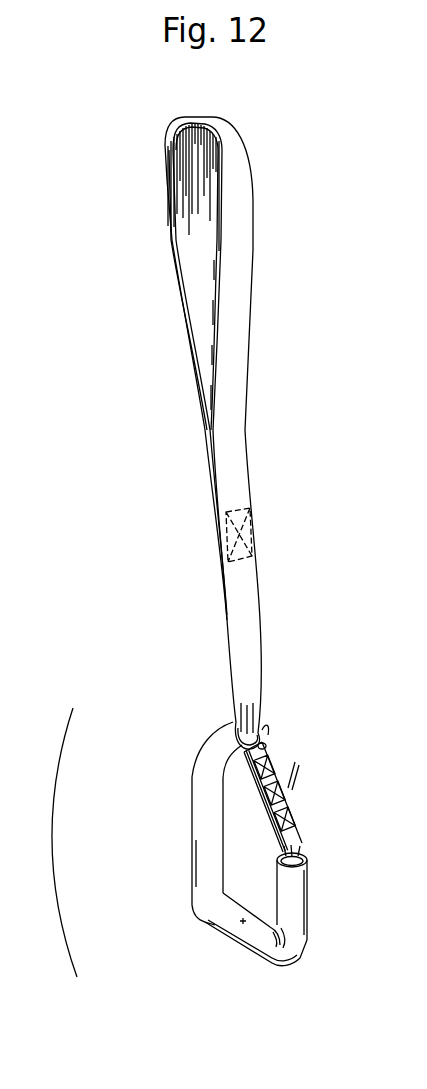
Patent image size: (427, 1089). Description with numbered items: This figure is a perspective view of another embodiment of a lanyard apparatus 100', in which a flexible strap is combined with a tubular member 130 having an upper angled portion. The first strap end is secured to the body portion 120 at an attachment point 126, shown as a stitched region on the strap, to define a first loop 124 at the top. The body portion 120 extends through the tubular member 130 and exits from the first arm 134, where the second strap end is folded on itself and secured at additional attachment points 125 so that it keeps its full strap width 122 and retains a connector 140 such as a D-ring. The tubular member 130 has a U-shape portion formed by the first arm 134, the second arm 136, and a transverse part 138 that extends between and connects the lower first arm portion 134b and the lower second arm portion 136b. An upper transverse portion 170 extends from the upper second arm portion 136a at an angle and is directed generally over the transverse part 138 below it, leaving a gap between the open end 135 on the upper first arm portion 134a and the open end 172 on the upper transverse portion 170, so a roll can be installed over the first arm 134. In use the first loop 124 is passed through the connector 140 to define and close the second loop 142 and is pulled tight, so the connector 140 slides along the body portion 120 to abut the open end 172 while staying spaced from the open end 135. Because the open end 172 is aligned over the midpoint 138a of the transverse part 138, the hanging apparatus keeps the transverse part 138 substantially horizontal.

The lanyard apparatus 100' is at (307, 144).
The body portion 120 is at (221, 433).
The strap width 122 is at (293, 788).
The first loop 124 is at (172, 236).
The additional attachment points 125 is at (277, 764).
The attachment point 126 is at (245, 535).
The tubular member 130 is at (265, 844).
The first arm 134 is at (341, 899).
The upper first arm portion 134a is at (300, 873).
The lower first arm portion 134b is at (293, 935).
The open end 135 is at (310, 854).
The second arm 136 is at (174, 850).
The upper second arm portion 136a is at (213, 786).
The lower second arm portion 136b is at (200, 893).
The transverse part 138 is at (204, 928).
The midpoint 138a is at (241, 923).
The connector 140 is at (264, 746).
The second loop 142 is at (54, 860).
The upper transverse portion 170 is at (211, 747).
The open end 172 is at (265, 728).